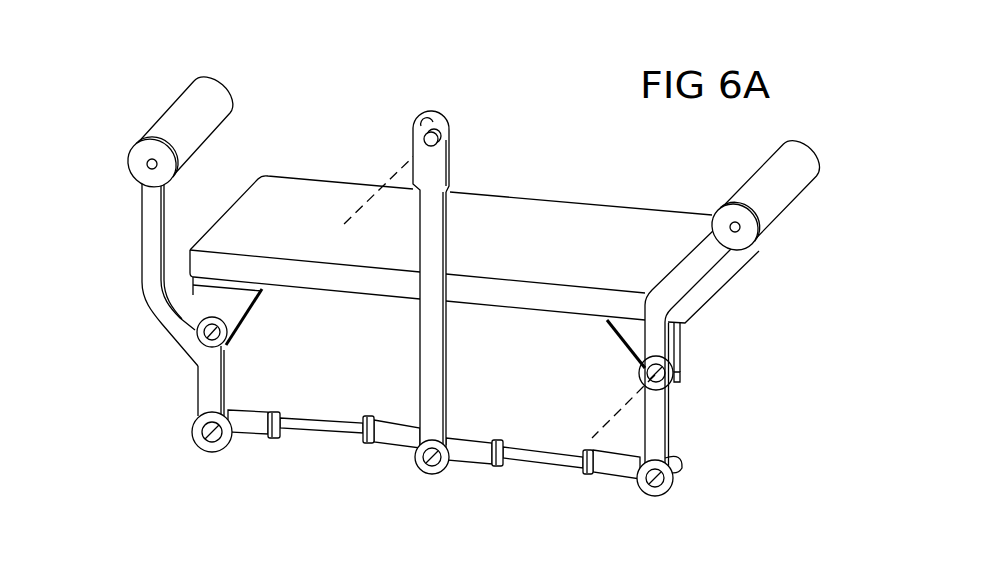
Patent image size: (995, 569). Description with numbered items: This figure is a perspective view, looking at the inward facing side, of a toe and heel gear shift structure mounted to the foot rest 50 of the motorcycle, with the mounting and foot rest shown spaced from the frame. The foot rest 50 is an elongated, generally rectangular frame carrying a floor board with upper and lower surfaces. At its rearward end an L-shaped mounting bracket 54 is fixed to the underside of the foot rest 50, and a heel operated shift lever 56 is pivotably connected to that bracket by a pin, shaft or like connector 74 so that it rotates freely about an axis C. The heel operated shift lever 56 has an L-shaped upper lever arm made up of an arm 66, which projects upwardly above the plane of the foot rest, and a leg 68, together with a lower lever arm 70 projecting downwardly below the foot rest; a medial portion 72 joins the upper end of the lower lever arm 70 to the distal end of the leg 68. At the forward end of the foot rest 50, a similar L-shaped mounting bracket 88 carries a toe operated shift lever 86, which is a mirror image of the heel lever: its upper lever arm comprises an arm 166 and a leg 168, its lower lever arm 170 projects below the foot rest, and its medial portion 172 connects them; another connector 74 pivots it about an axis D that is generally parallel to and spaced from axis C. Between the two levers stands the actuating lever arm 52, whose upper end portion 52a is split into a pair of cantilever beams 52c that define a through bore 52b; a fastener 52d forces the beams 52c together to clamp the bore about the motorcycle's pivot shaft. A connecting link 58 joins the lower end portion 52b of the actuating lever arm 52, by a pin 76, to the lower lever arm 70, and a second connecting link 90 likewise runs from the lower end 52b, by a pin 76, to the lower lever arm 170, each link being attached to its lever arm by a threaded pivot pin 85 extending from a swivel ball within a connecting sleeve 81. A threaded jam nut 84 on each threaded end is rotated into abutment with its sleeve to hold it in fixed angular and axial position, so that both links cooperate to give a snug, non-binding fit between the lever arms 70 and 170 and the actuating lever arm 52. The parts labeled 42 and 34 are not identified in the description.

The second roller 34 is at (755, 183).
The first roller 42 is at (172, 122).
The footrest 50 is at (535, 92).
The actuating lever arm 52 is at (440, 343).
The upper end portion 52a is at (447, 192).
The lower end portion 52b is at (426, 140).
The cantilever beams 52c is at (430, 124).
The fastener 52d is at (450, 136).
The mounting bracket 54 is at (192, 285).
The heel operated shift lever 56 is at (122, 235).
The connecting link 58 is at (332, 432).
The arm 66 is at (150, 207).
The leg 68 is at (152, 312).
The lower lever arm 70 is at (212, 393).
The medial portion 72 is at (226, 342).
The connector 74 is at (222, 330).
The pin 76 is at (468, 460).
The connecting sleeve 81 is at (248, 425).
The threaded jam nut 84 is at (274, 432).
The pivot pin 85 is at (198, 440).
The toe operated shift lever 86 is at (786, 316).
The mounting bracket 88 is at (625, 338).
The connecting link 90 is at (543, 465).
The arm 166 is at (690, 296).
The leg 168 is at (668, 333).
The lower lever arm 170 is at (666, 430).
The medial portion 172 is at (672, 378).
The axis C is at (357, 213).
The axis D is at (622, 402).